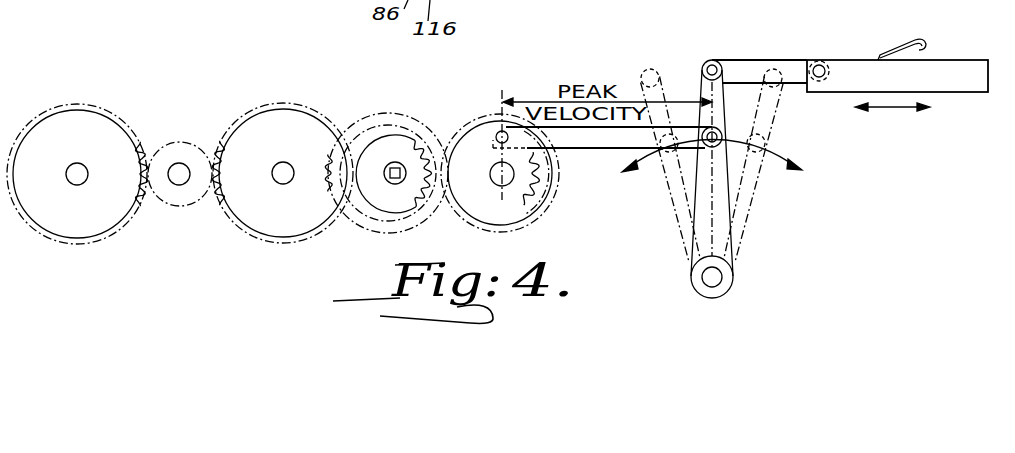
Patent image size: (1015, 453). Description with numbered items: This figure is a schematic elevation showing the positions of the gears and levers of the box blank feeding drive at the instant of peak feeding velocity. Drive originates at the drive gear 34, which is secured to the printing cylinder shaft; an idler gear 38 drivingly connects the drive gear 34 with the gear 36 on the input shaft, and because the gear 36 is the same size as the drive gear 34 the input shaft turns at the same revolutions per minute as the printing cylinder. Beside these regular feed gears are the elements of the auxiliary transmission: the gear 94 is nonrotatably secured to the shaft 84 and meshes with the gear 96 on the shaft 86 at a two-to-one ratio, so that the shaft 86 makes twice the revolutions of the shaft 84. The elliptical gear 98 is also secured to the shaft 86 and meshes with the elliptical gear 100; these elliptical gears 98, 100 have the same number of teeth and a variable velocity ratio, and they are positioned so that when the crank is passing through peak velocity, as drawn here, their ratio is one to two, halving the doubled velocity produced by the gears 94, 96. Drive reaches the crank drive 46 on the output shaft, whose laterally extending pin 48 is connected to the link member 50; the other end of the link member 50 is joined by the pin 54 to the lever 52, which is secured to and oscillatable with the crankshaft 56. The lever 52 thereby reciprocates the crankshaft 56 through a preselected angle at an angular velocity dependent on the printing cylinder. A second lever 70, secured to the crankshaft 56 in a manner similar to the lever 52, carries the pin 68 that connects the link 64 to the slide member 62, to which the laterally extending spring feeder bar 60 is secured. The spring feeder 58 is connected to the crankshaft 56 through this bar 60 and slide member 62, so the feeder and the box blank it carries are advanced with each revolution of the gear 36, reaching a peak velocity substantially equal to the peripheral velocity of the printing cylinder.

The drive gear 34 is at (86, 96).
The gear 36 is at (286, 104).
The idler gear 38 is at (178, 210).
The crank drive 46 is at (546, 210).
The pin 48 is at (497, 131).
The link member 50 is at (597, 141).
The lever 52 is at (714, 228).
The pin 54 is at (700, 148).
The crankshaft 56 is at (712, 277).
The spring feeder 58 is at (918, 42).
The spring feeder bar 60 is at (915, 54).
The slide member 62 is at (971, 82).
The link 64 is at (793, 60).
The pin 68 is at (710, 60).
The lever 70 is at (702, 84).
The shaft 84 is at (284, 183).
The shaft 86 is at (399, 167).
The gear 94 is at (272, 152).
The gear 96 is at (381, 140).
The elliptical gear 98 is at (370, 213).
The elliptical gear 100 is at (455, 211).